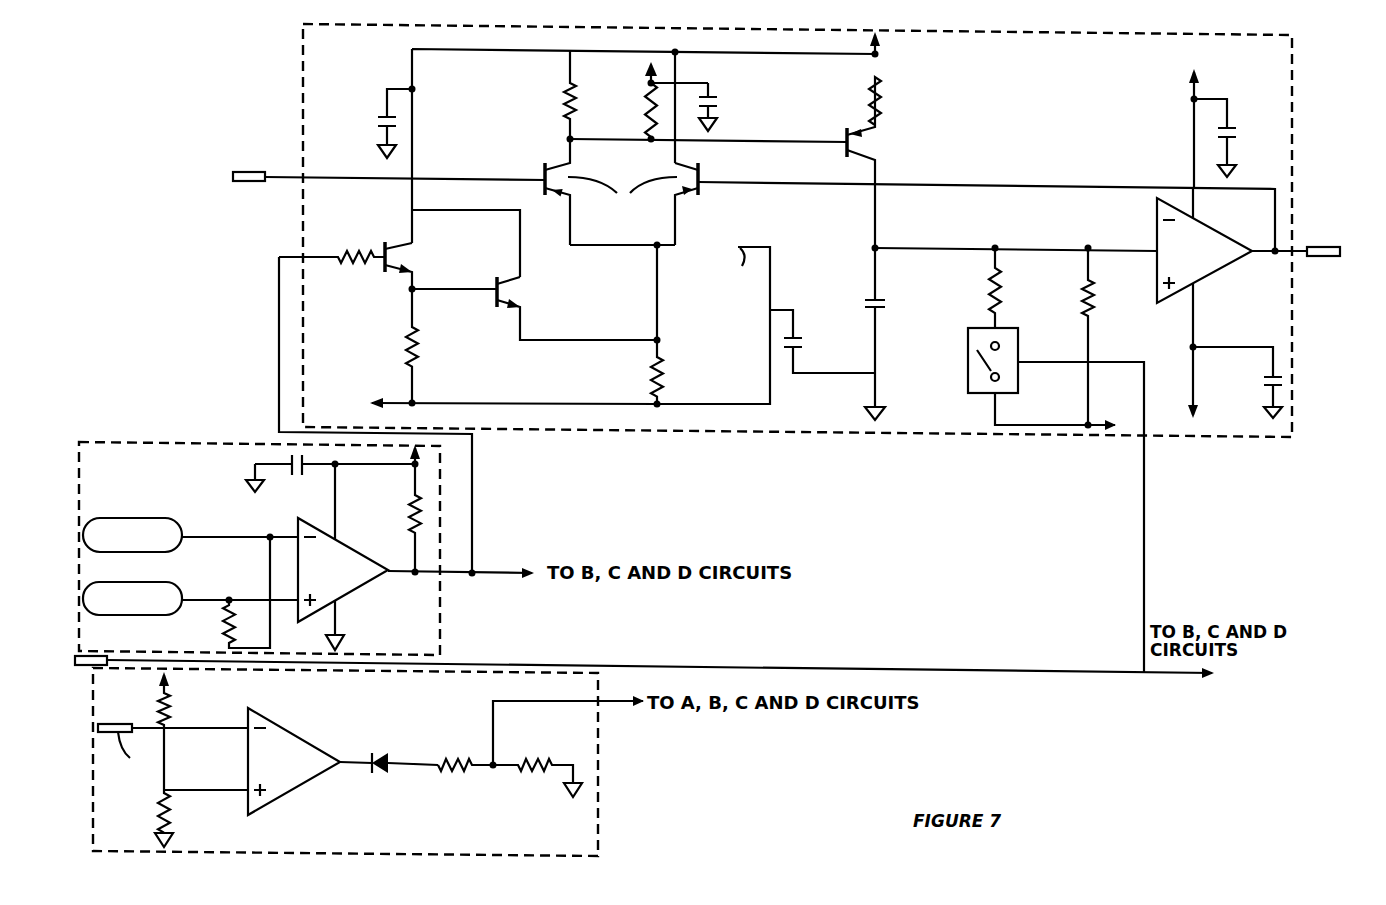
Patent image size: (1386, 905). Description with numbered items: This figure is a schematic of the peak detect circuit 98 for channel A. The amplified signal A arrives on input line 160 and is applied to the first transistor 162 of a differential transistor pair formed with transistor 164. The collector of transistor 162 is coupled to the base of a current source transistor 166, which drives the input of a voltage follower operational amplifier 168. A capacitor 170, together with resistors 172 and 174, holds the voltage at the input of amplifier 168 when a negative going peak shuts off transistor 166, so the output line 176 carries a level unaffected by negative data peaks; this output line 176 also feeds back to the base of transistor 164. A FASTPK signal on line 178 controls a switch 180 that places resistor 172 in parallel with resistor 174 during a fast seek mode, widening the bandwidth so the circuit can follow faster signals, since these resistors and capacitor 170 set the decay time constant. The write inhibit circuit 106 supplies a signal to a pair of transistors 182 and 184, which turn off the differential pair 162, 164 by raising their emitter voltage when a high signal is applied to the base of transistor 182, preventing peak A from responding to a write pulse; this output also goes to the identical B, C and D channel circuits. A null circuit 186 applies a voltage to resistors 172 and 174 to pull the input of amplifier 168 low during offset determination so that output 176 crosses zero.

The peak detect circuit 98 is at (945, 33).
The write inhibit circuit 106 is at (232, 442).
The input line 160 is at (250, 171).
The transistor 162 is at (568, 162).
The transistor 164 is at (688, 192).
The current source transistor 166 is at (870, 158).
The voltage follower operational amplifier 168 is at (1157, 213).
The capacitor 170 is at (885, 306).
The resistor 172 is at (992, 290).
The resistor 174 is at (1091, 284).
The output line 176 is at (1328, 258).
The line 178 is at (512, 665).
The switch 180 is at (1018, 334).
The transistor 182 is at (405, 242).
The transistor 184 is at (496, 295).
The null circuit 186 is at (598, 760).